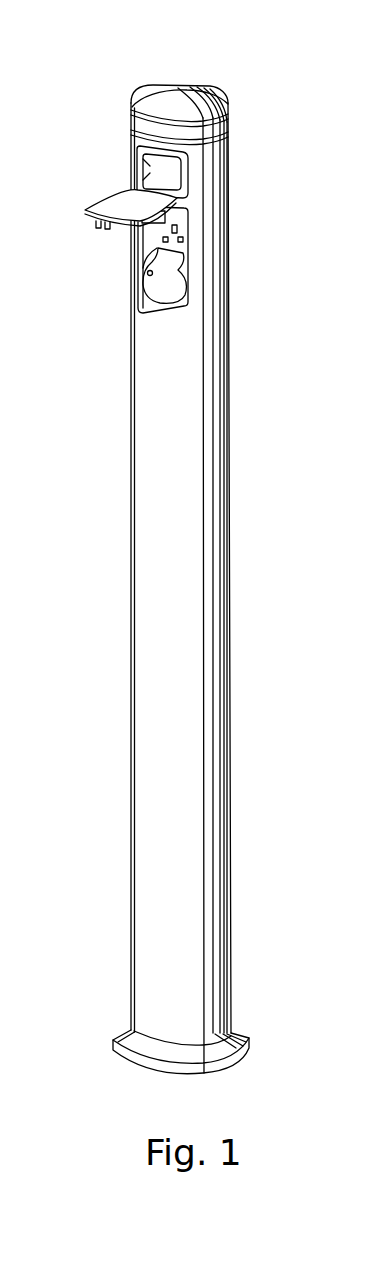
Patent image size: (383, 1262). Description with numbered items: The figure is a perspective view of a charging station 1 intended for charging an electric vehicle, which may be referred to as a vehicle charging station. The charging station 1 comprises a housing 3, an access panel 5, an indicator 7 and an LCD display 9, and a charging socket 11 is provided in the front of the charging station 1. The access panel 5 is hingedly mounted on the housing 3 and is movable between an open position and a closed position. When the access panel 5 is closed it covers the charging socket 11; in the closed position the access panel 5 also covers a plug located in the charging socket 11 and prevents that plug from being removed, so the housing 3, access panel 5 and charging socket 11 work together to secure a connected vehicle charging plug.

The charging station 1 is at (95, 46).
The housing 3 is at (147, 915).
The access panel 5 is at (108, 201).
The indicator 7 is at (228, 124).
The LCD display 9 is at (153, 167).
The charging socket 11 is at (160, 245).